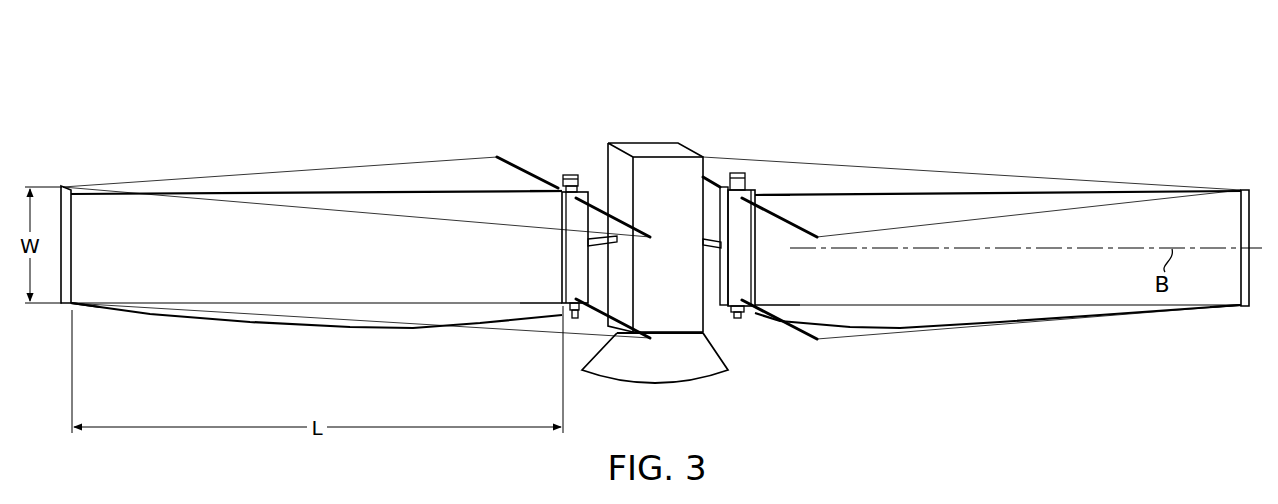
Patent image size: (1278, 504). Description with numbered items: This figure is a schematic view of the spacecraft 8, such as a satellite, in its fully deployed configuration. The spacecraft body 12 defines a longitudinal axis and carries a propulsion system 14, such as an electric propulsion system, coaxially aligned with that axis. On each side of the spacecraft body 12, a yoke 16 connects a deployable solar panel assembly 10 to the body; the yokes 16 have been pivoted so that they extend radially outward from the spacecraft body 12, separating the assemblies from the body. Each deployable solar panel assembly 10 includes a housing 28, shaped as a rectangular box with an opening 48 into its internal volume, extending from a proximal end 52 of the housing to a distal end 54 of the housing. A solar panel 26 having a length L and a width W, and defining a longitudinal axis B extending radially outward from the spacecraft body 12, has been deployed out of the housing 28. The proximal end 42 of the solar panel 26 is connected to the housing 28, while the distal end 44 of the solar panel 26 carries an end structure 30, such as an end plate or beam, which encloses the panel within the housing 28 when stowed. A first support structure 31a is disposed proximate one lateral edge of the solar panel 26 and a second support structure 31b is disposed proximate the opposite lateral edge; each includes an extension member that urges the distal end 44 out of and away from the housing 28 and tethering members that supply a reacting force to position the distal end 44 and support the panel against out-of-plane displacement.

The spacecraft 8 is at (677, 171).
The deployable solar panel assembly 10 is at (656, 169).
The spacecraft body 12 is at (652, 143).
The propulsion system 14 is at (660, 388).
The yoke 16 is at (612, 242).
The solar panel 26 is at (322, 306).
The housing 28 is at (576, 208).
The end structure 30 is at (62, 188).
The first support structure 31a is at (652, 257).
The second support structure 31b is at (655, 253).
The proximal end 42 is at (524, 306).
The distal end 44 is at (78, 306).
The opening 48 is at (562, 268).
The proximal end of the housing 52 is at (590, 280).
The distal end of the housing 54 is at (562, 240).